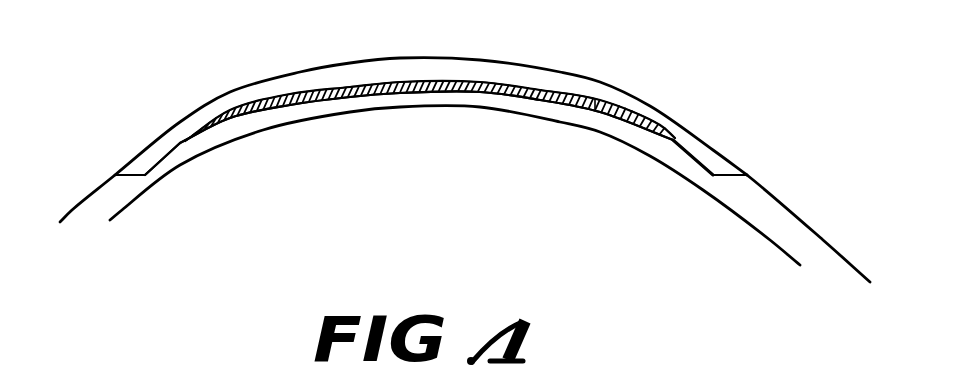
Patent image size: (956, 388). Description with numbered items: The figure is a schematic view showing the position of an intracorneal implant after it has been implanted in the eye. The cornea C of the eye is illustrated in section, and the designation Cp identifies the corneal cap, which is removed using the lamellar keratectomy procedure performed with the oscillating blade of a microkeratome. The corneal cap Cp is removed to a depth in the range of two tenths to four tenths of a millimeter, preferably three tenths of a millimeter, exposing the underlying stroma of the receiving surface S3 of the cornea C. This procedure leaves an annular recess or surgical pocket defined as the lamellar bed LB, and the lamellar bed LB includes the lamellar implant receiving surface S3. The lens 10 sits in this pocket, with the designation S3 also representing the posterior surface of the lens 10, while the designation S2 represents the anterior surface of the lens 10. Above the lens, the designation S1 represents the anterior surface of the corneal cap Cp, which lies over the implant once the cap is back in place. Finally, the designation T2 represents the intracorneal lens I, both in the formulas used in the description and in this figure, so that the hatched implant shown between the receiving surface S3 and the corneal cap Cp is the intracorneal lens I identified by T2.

The cornea C is at (781, 209).
The corneal cap Cp is at (715, 155).
The lamellar bed LB is at (170, 153).
The anterior surface of the corneal cap S1 is at (382, 58).
The anterior surface of the lens S2 is at (462, 80).
The lamellar implant receiving surface S3 is at (658, 128).
The lens 10 is at (428, 108).
The intracorneal lens I is at (430, 111).
The intracorneal lens designation T2 is at (595, 100).